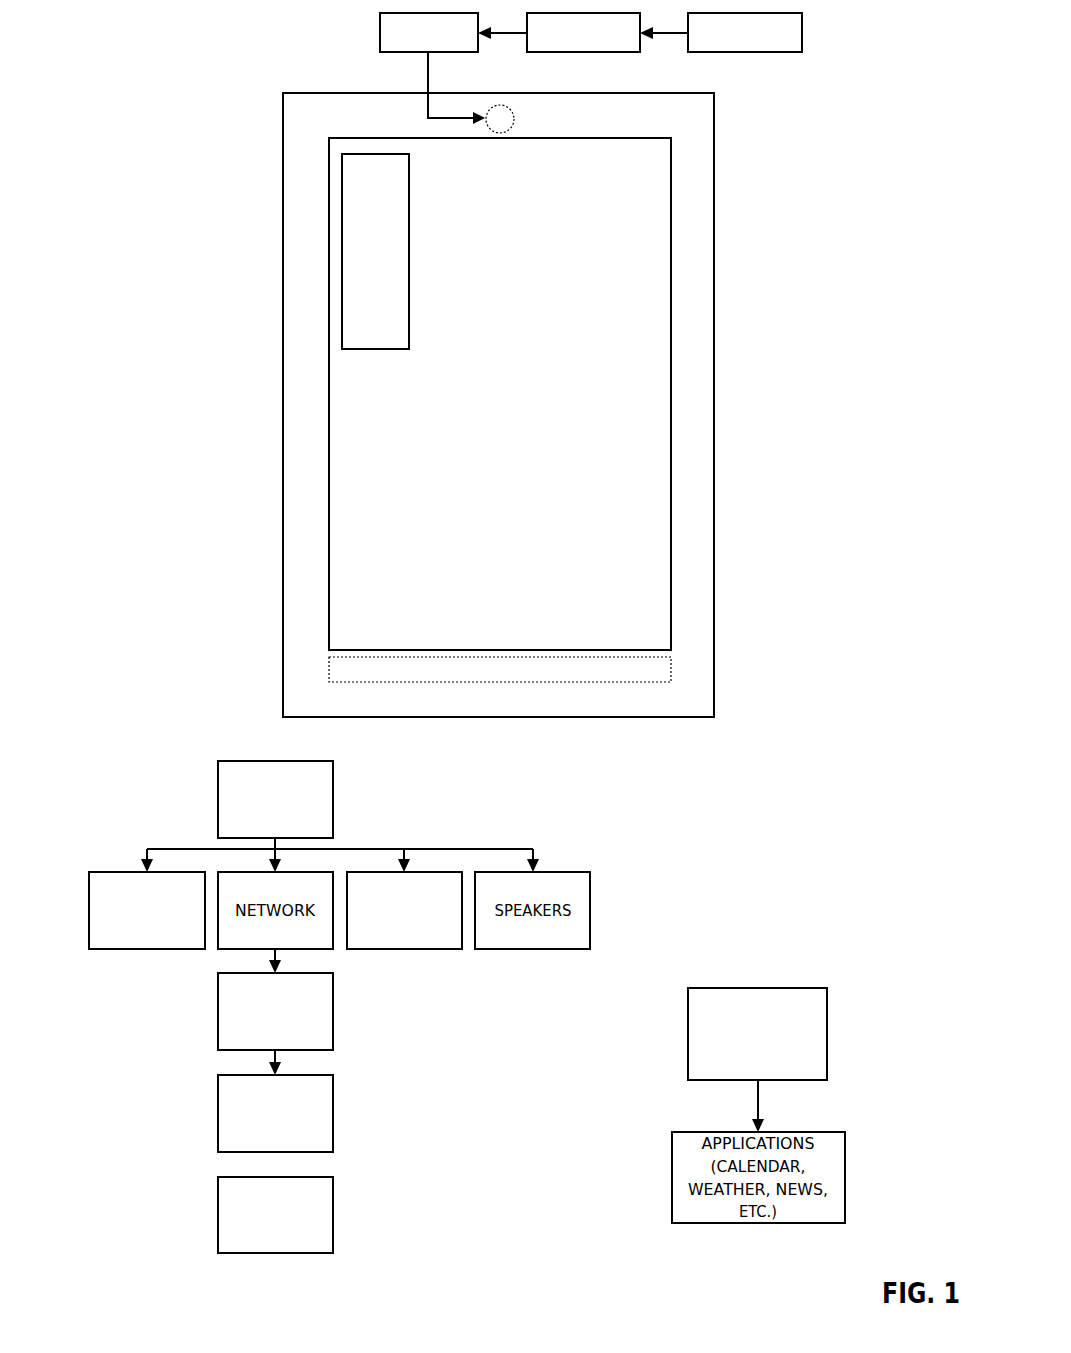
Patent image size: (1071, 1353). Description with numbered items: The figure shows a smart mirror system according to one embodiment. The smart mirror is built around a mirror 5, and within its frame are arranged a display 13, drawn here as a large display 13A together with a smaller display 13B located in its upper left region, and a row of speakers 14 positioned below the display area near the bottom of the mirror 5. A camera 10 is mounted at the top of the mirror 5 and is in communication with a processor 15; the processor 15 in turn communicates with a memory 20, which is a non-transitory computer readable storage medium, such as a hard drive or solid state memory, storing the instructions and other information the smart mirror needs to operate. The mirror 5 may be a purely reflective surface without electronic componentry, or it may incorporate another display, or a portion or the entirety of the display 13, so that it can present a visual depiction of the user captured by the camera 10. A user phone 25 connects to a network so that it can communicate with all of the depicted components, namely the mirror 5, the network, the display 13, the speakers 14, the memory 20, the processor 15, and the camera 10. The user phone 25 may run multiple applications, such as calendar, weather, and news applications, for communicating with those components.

The mirror 5 is at (714, 407).
The camera 10 is at (380, 32).
The display 13 is at (417, 949).
The display 13A is at (672, 258).
The display 13B is at (342, 245).
The speakers 14 is at (671, 669).
The processor 15 is at (598, 52).
The memory 20 is at (755, 52).
The user phone 25 is at (333, 799).